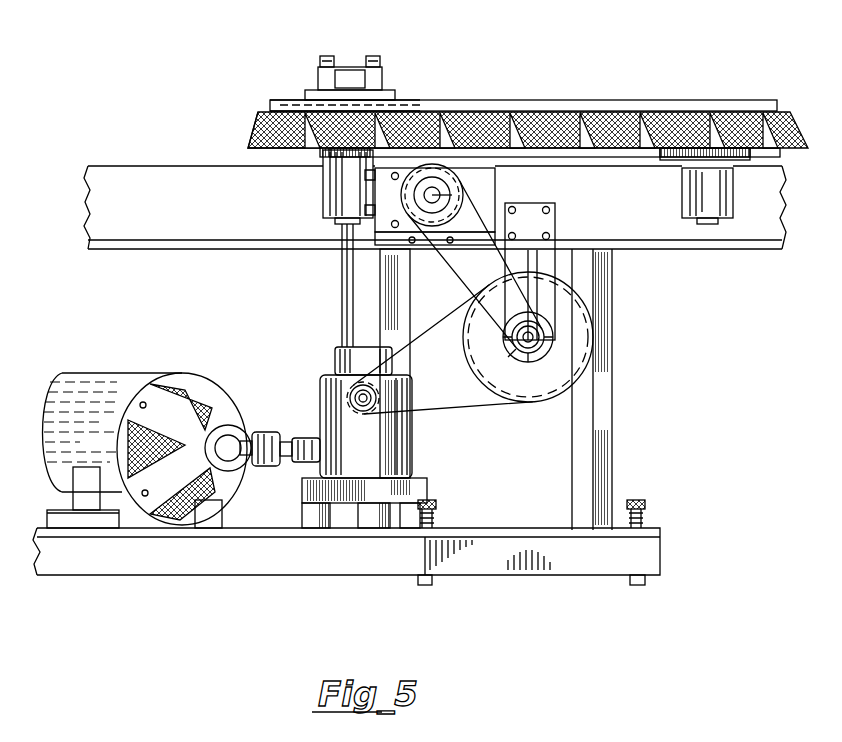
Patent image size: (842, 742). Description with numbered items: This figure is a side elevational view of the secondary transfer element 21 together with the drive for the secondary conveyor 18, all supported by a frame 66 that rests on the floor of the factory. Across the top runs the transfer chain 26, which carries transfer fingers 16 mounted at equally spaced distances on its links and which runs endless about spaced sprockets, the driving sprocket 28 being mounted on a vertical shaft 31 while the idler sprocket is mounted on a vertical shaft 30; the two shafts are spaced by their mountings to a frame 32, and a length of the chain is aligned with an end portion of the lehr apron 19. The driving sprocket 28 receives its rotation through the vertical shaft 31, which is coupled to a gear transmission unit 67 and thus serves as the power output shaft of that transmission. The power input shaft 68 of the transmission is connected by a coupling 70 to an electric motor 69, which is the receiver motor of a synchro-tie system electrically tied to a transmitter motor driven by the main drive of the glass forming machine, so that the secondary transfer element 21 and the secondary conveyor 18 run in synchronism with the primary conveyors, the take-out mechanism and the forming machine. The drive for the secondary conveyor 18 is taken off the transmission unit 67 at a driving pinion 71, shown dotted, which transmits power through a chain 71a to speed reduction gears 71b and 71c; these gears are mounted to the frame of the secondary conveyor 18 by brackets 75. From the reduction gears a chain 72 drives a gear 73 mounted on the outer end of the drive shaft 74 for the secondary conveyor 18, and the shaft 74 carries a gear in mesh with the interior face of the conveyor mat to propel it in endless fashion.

The transfer fingers 16 is at (262, 143).
The secondary conveyor 18 is at (762, 232).
The lehr apron 19 is at (122, 178).
The secondary transfer element 21 is at (500, 88).
The transfer chain 26 is at (612, 122).
The driving sprocket 28 is at (332, 76).
The vertical shaft 30 is at (710, 225).
The vertical shaft 31 is at (343, 286).
The frame 32 is at (614, 156).
The frame 66 is at (616, 414).
The gear transmission unit 67 is at (322, 386).
The power input shaft 68 is at (293, 439).
The electric motor 69 is at (146, 338).
The coupling 70 is at (264, 432).
The driving pinion 71 is at (354, 384).
The chain 71a is at (445, 408).
The speed reduction gear 71b is at (538, 390).
The speed reduction gear 71c is at (521, 350).
The chain 72 is at (458, 269).
The gear 73 is at (456, 182).
The drive shaft 74 is at (437, 196).
The brackets 75 is at (547, 227).